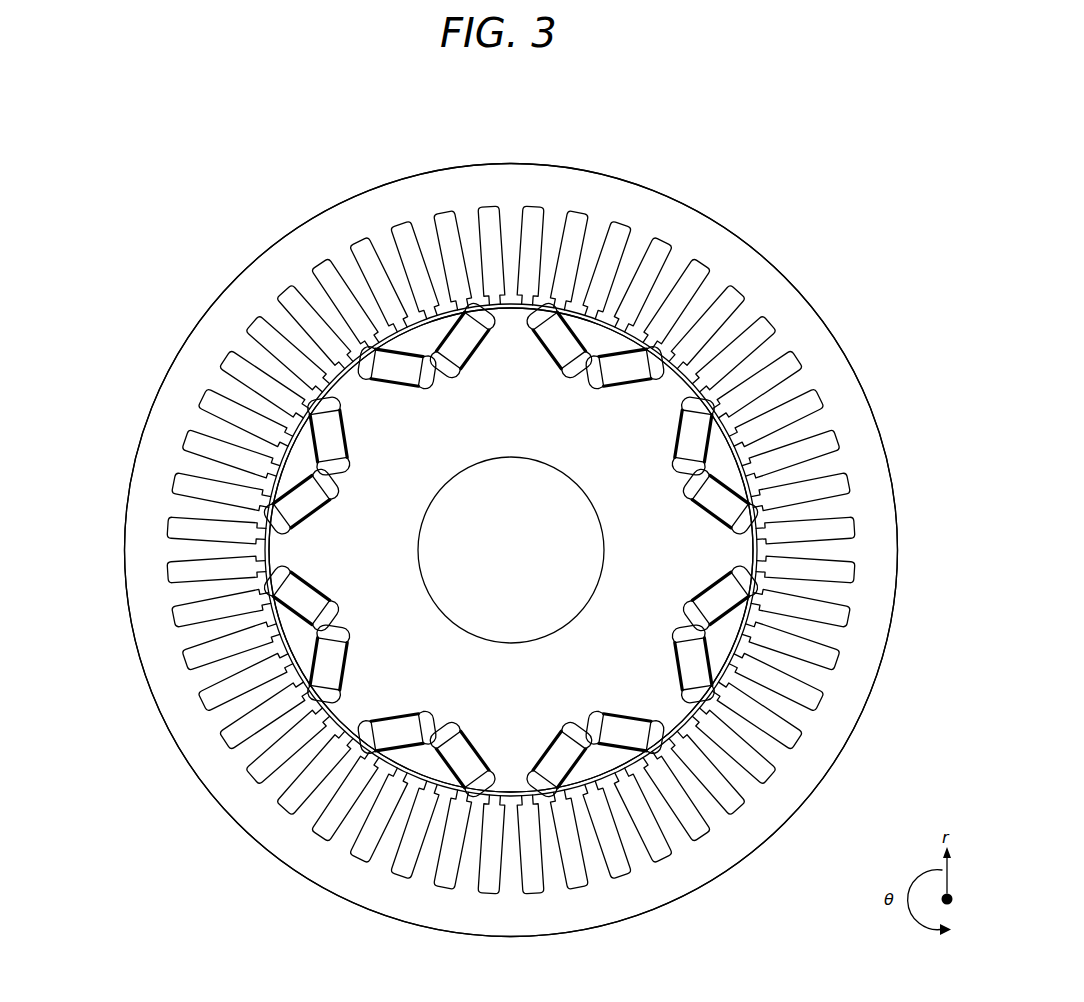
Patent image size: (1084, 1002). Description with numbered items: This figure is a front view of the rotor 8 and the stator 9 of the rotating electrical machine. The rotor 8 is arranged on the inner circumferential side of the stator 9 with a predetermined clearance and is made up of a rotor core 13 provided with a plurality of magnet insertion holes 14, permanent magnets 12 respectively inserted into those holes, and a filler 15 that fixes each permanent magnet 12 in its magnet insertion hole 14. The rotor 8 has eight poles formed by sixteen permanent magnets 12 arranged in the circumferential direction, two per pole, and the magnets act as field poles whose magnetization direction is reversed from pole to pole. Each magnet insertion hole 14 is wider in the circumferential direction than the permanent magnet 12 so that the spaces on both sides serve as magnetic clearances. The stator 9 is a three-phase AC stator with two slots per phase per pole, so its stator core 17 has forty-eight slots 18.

The rotor 8 is at (722, 462).
The stator 9 is at (867, 447).
The permanent magnet 12 is at (392, 367).
The rotor core 13 is at (670, 702).
The magnet insertion hole 14 is at (758, 580).
The filler 15 is at (365, 732).
The stator core 17 is at (142, 570).
The slot 18 is at (215, 405).